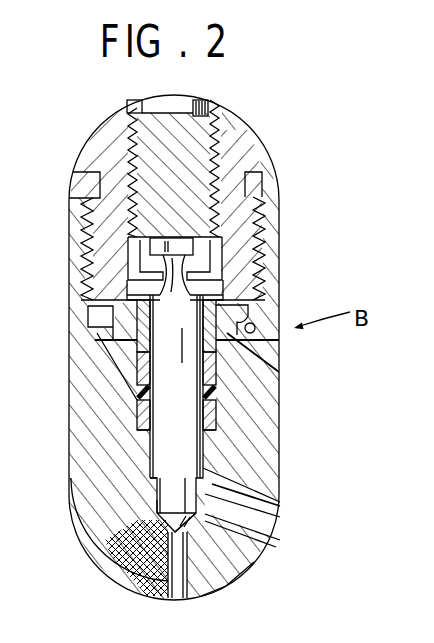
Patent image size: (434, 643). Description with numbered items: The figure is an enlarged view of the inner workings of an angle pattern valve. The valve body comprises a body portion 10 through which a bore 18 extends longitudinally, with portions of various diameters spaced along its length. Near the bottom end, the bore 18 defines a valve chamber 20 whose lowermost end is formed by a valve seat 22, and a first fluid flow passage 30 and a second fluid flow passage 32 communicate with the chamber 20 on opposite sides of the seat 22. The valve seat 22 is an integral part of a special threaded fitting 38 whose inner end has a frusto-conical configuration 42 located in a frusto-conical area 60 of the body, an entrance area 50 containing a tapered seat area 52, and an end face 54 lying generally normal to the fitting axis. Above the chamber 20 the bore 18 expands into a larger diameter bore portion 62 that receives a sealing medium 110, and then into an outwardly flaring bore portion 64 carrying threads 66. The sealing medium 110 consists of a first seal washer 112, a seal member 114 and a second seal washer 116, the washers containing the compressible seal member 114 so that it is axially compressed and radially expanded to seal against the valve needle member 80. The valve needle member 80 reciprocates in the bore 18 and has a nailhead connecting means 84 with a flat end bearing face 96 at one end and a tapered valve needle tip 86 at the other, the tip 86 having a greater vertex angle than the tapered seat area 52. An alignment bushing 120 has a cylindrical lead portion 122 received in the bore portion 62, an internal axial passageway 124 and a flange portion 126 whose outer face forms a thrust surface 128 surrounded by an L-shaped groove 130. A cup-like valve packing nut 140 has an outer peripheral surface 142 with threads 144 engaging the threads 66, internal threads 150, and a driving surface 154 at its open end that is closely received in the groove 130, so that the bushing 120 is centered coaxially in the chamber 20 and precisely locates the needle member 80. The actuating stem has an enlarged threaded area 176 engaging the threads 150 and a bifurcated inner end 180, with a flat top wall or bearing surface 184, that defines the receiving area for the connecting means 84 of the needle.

The body portion 10 is at (258, 427).
The bore 18 is at (138, 474).
The valve chamber 20 is at (243, 468).
The valve seat 22 is at (205, 530).
The first fluid flow passage 30 is at (165, 573).
The second fluid flow passage 32 is at (263, 500).
The threaded fitting 38 is at (210, 575).
The frusto-conical configuration 42 is at (100, 520).
The entrance area 50 is at (146, 501).
The tapered seat area 52 is at (148, 580).
The end face 54 is at (276, 528).
The frusto-conical area 60 is at (237, 558).
The larger diameter bore portion 62 is at (210, 395).
The enlarged diameter bore portion 64 is at (257, 340).
The threads 66 is at (236, 243).
The valve needle member 80 is at (186, 388).
The connecting means 84 is at (176, 290).
The valve needle tip 86 is at (173, 511).
The end bearing surface 96 is at (156, 241).
The sealing medium 110 is at (124, 397).
The first seal washer 112 is at (146, 430).
The seal member 114 is at (138, 403).
The second seal washer 116 is at (137, 365).
The alignment bushing 120 is at (92, 322).
The lead portion 122 is at (258, 355).
The internal axial passageway 124 is at (262, 279).
The flange portion 126 is at (135, 330).
The thrust surface 128 is at (140, 254).
The L-shaped groove 130 is at (138, 290).
The valve packing nut 140 is at (237, 126).
The outer peripheral surface 142 is at (118, 118).
The threads 144 is at (262, 257).
The threads 150 is at (217, 163).
The driving surface 154 is at (258, 308).
The threaded area 176 is at (182, 112).
The bifurcated inner end 180 is at (212, 240).
The bearing surface 184 is at (181, 217).